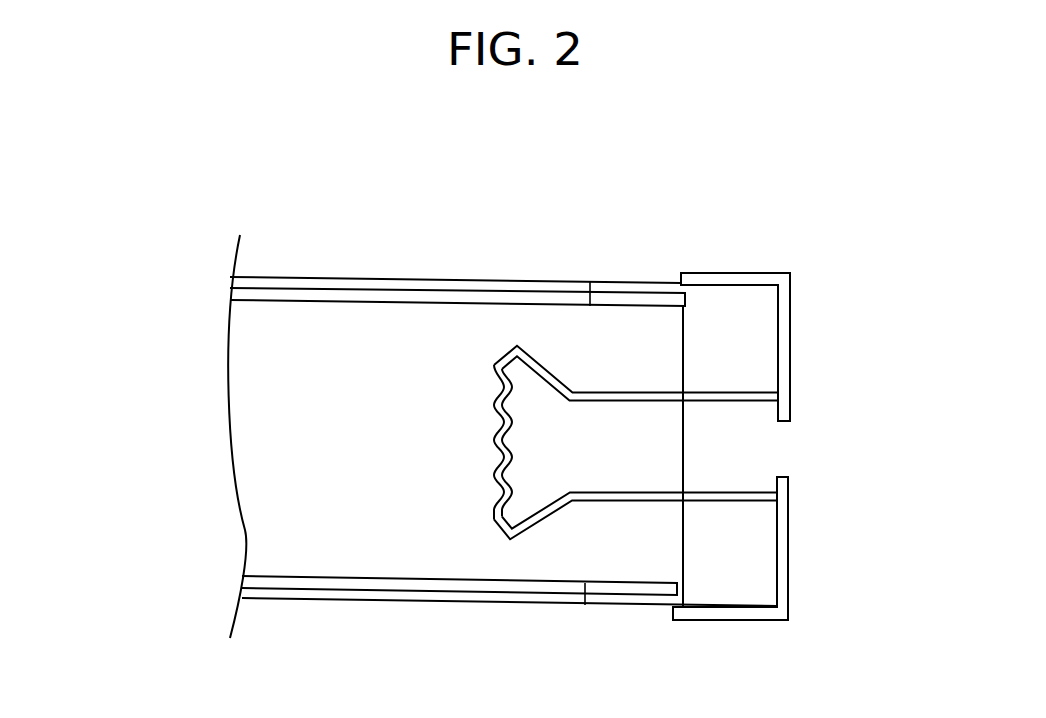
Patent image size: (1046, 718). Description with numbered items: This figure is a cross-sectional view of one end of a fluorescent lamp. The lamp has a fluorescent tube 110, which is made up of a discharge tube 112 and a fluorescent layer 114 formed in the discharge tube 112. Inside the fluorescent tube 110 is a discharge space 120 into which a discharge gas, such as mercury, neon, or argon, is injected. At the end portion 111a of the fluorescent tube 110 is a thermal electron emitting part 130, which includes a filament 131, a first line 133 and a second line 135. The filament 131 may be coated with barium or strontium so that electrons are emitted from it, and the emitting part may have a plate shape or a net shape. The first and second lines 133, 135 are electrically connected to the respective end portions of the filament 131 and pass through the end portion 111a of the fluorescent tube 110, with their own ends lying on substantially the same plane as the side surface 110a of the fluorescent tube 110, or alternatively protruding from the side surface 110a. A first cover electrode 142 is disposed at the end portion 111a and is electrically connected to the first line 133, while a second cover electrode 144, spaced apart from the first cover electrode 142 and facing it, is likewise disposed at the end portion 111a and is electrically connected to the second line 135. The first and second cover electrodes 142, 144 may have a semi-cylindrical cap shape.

The fluorescent tube 110 is at (133, 245).
The discharge tube 112 is at (230, 278).
The fluorescent layer 114 is at (230, 289).
The discharge space 120 is at (248, 442).
The thermal electron emitting part 130 is at (403, 392).
The filament 131 is at (497, 440).
The first line 133 is at (578, 394).
The second line 135 is at (578, 497).
The first cover electrode 142 is at (782, 342).
The second cover electrode 144 is at (782, 553).
The side surface 110a is at (778, 447).
The end portion 111a is at (664, 283).